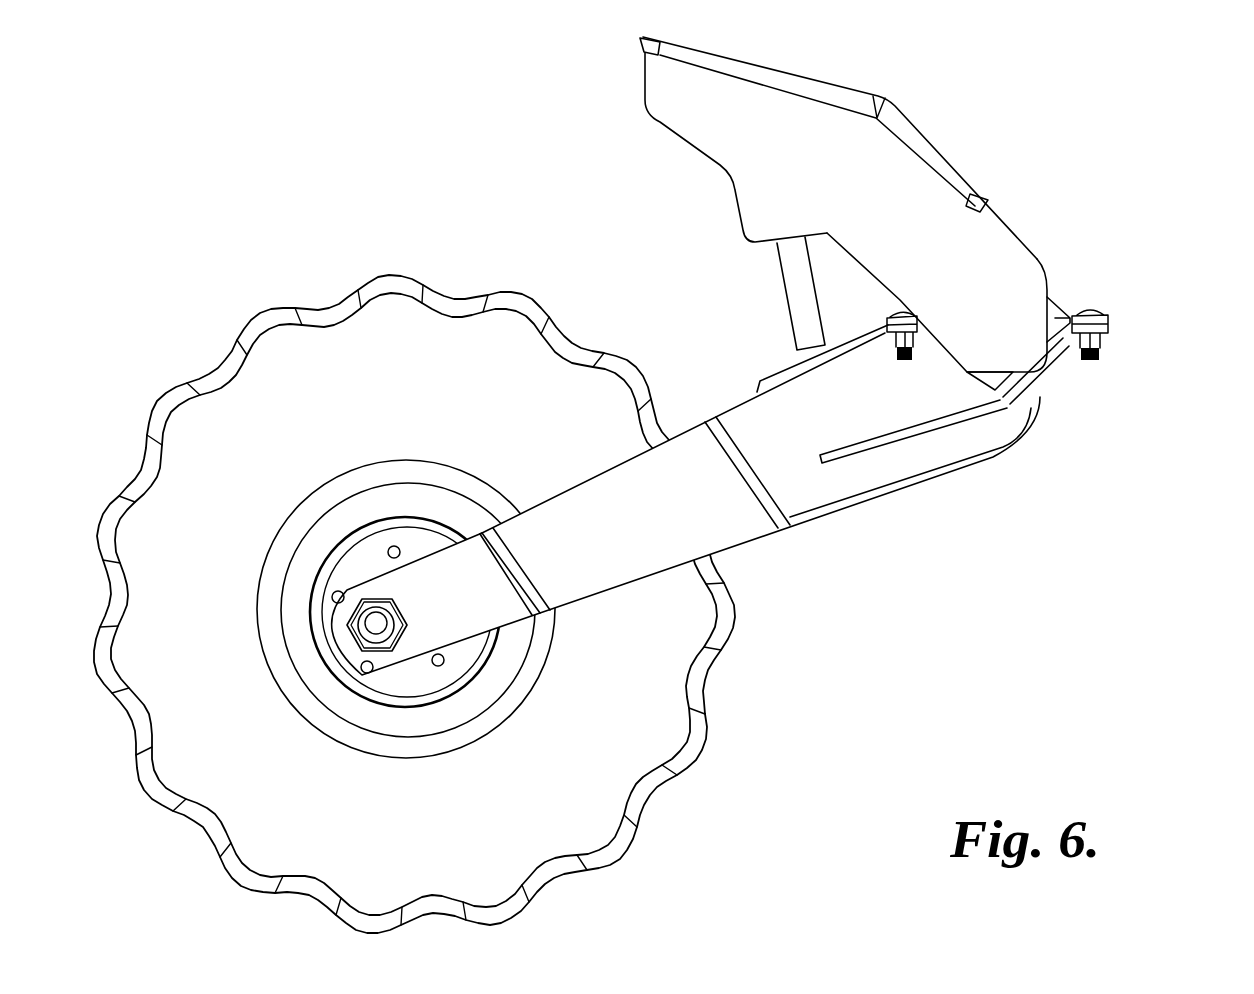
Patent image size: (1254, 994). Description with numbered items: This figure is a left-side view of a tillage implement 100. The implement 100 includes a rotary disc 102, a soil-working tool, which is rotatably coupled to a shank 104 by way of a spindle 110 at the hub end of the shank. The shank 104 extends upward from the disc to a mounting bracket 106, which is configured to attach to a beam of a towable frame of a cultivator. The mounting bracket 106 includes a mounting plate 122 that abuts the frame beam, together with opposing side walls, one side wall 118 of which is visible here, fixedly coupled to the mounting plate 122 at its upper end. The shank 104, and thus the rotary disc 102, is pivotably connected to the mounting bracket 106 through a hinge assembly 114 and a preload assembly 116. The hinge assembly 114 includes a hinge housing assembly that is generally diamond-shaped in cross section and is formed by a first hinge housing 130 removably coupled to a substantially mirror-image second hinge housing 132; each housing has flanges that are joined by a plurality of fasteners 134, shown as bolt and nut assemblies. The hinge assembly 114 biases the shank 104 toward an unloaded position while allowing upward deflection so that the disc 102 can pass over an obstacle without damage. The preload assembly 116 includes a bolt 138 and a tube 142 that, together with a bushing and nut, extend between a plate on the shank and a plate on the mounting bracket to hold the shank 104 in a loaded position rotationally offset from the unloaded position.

The tillage implement 100 is at (296, 165).
The rotary disc 102 is at (662, 740).
The shank 104 is at (820, 485).
The mounting bracket 106 is at (685, 82).
The spindle 110 is at (375, 628).
The hinge assembly 114 is at (1112, 383).
The preload assembly 116 is at (715, 253).
The side wall 118 is at (947, 212).
The mounting plate 122 is at (766, 74).
The first hinge housing 130 is at (1053, 300).
The second hinge housing 132 is at (1013, 383).
The fasteners 134 is at (897, 338).
The bolt 138 is at (813, 354).
The tube 142 is at (802, 292).